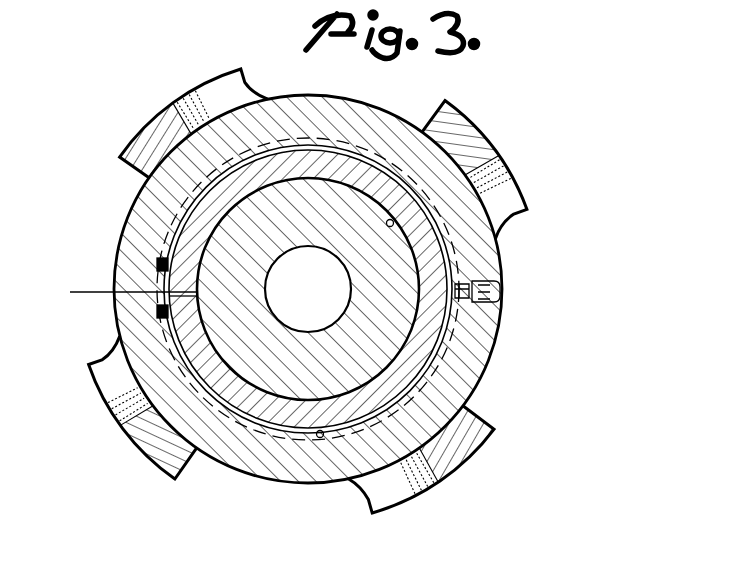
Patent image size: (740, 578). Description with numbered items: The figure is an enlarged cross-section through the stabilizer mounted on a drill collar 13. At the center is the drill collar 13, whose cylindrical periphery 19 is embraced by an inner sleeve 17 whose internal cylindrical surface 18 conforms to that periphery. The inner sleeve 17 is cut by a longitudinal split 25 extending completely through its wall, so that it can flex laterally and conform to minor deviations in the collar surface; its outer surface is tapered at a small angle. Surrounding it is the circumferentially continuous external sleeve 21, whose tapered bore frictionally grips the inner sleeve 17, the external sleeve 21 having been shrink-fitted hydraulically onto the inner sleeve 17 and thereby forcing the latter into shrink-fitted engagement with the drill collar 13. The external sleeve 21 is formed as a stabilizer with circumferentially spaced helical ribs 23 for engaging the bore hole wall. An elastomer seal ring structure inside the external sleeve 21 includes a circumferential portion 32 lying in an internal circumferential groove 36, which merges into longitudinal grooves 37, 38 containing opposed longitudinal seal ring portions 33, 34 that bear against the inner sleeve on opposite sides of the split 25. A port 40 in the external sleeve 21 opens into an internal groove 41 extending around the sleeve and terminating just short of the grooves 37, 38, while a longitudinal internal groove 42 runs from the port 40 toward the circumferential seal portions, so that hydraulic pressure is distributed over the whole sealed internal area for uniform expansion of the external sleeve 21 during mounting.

The drill collar 13 is at (300, 385).
The inner sleeve 17 is at (345, 162).
The internal cylindrical surface 18 is at (420, 200).
The cylindrical periphery 19 is at (394, 224).
The external sleeve 21 is at (462, 380).
The helical ribs 23 is at (162, 118).
The longitudinal split 25 is at (114, 296).
The lower circumferential seal ring portion 32 is at (272, 143).
The longitudinal seal ring portion 33 is at (157, 265).
The longitudinal seal ring portion 34 is at (157, 310).
The internal circumferential groove 36 is at (216, 162).
The longitudinal groove 37 is at (160, 258).
The longitudinal groove 38 is at (172, 302).
The port 40 is at (500, 300).
The internal groove 41 is at (320, 438).
The longitudinal internal groove 42 is at (470, 285).